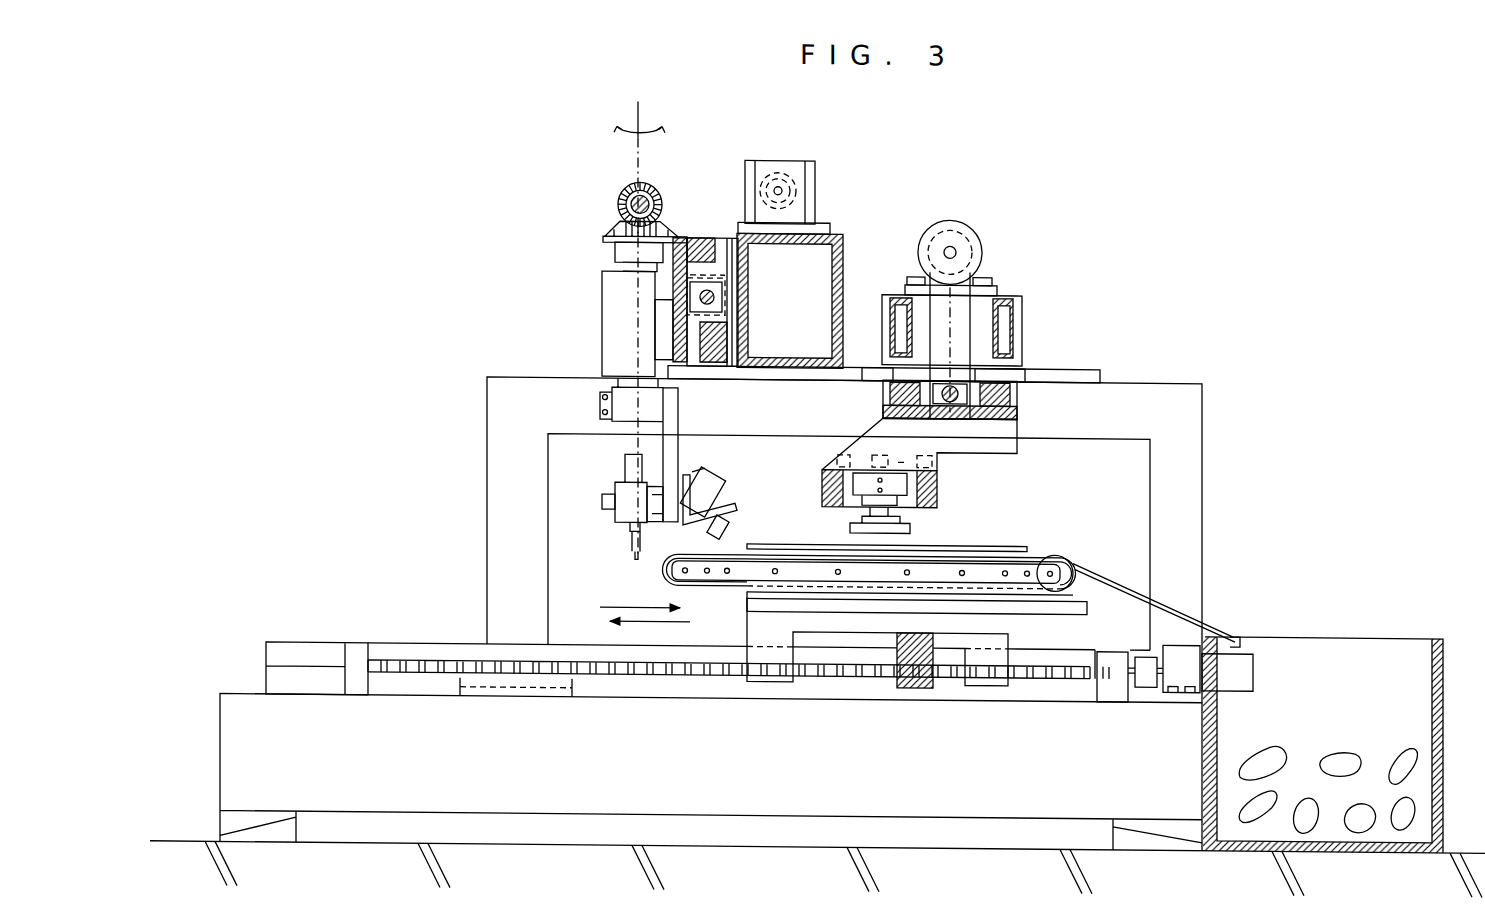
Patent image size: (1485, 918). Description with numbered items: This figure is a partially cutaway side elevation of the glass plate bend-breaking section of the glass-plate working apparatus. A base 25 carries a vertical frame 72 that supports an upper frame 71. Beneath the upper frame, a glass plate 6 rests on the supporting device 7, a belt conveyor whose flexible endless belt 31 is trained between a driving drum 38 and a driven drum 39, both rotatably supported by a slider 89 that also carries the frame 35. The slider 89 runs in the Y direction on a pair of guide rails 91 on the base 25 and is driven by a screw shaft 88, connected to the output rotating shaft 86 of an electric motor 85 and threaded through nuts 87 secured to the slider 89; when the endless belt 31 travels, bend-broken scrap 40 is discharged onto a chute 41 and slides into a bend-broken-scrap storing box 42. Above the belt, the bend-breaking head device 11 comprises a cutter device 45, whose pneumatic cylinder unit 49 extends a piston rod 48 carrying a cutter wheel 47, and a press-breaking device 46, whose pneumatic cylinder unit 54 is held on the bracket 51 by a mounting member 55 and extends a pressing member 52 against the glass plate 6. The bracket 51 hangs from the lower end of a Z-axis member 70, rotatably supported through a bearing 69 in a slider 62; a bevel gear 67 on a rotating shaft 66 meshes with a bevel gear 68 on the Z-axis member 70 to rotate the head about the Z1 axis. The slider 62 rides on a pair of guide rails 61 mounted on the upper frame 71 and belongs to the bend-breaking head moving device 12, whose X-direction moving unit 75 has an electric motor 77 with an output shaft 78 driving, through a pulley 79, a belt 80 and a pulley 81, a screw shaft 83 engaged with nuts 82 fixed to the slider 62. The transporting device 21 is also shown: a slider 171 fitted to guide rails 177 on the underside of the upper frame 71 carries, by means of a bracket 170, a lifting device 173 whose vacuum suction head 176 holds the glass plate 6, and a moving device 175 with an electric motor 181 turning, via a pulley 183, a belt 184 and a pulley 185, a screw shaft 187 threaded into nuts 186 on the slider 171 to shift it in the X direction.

The Z1 axis Z1 is at (637, 167).
The bevel gear 67 is at (624, 190).
The rotating shaft 66 is at (620, 207).
The bevel gear 68 is at (612, 238).
The Z-axis member 70 is at (618, 262).
The bearing 69 is at (602, 287).
The nuts 82 is at (655, 310).
The slider 62 is at (673, 338).
The guide rails 61 is at (710, 247).
The belt 80 is at (708, 247).
The pulley 81 is at (720, 290).
The screw shaft 83 is at (722, 300).
The bend-breaking head moving device 12 is at (1126, 700).
The X-direction moving unit 75 is at (795, 158).
The pulley 79 is at (745, 167).
The electric motor 77 is at (812, 168).
The output shaft 78 is at (786, 190).
The upper frame 71 is at (843, 250).
The pulley 183 is at (931, 222).
The electric motor 181 is at (976, 232).
The transporting device 21 is at (988, 260).
The belt 184 is at (1000, 289).
The guide rails 177 is at (890, 389).
The slider 171 is at (1020, 388).
The pulley 185 is at (1017, 404).
The nuts 186 is at (913, 416).
The screw shaft 187 is at (985, 417).
The bracket 170 is at (1017, 448).
The lifting device 173 is at (947, 485).
The moving device 175 is at (866, 481).
The vacuum suction head 176 is at (912, 526).
The vertical frame 72 is at (487, 402).
The bracket 51 is at (678, 400).
The bend-breaking head device 11 is at (600, 490).
The pneumatic cylinder unit 49 is at (628, 477).
The cutter device 45 is at (603, 513).
The piston rod 48 is at (630, 537).
The cutter wheel 47 is at (633, 543).
The pneumatic cylinder unit 54 is at (712, 480).
The press-breaking device 46 is at (726, 490).
The mounting member 55 is at (733, 503).
The pressing member 52 is at (727, 525).
The driven drum 39 is at (668, 578).
The endless belt 31 is at (722, 588).
The glass plate 6 is at (1000, 552).
The supporting device 7 is at (1052, 548).
The driving drum 38 is at (1070, 553).
The chute 41 is at (1176, 608).
The frame 35 is at (1088, 605).
The slider 89 is at (1010, 632).
The guide rails 91 is at (432, 646).
The screw shaft 88 is at (660, 677).
The nuts 87 is at (917, 688).
The output rotating shaft 86 is at (1151, 690).
The electric motor 85 is at (1254, 665).
The bend-broken scrap 40 is at (1400, 746).
The bend-broken-scrap storing box 42 is at (1443, 648).
The base 25 is at (940, 815).